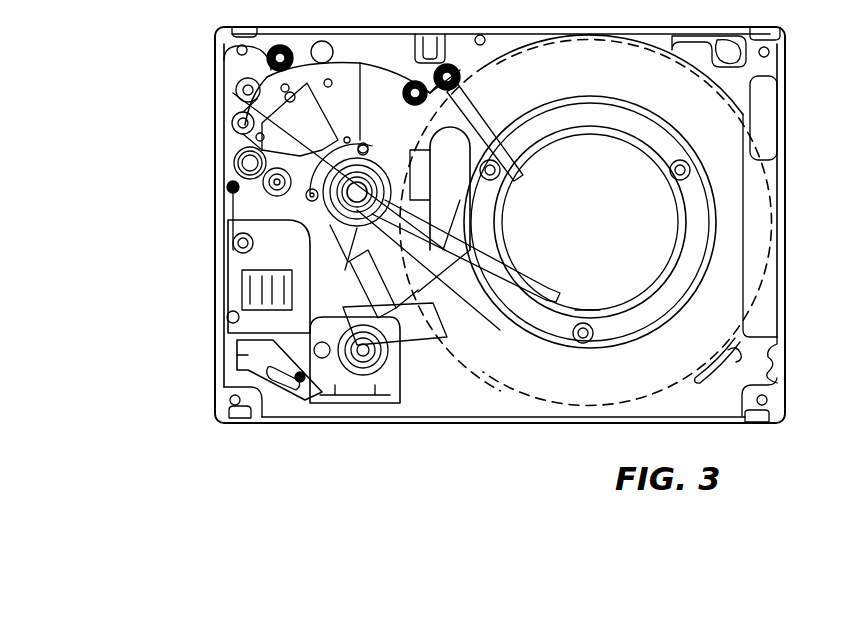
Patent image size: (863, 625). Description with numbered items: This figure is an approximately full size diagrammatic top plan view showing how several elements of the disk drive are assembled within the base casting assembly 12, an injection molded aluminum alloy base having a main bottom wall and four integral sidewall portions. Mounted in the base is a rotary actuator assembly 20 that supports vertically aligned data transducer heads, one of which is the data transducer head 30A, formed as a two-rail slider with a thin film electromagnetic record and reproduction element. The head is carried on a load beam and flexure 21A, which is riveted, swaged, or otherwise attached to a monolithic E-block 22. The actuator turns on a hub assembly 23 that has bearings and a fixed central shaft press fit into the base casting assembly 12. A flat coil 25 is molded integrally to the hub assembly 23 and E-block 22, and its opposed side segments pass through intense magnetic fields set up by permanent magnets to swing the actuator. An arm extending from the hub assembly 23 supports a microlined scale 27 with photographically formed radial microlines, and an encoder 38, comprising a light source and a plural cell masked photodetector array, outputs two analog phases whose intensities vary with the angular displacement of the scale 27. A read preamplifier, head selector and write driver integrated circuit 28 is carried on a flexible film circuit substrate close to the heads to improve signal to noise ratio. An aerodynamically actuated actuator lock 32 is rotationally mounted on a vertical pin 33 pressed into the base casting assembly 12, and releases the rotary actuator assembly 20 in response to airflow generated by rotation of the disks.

The base casting assembly 12 is at (790, 140).
The rotary actuator assembly 20 is at (250, 203).
The load beam and flexure 21A is at (493, 246).
The E-block 22 is at (405, 190).
The hub assembly 23 is at (398, 160).
The flat coil 25 is at (262, 107).
The microlined scale 27 is at (447, 337).
The read preamplifier/head selector/write driver integrated circuit 28 is at (243, 247).
The data transducer head 30A is at (556, 286).
The aerodynamically actuated actuator lock 32 is at (523, 177).
The vertical pin 33 is at (455, 35).
The encoder 38 is at (260, 387).